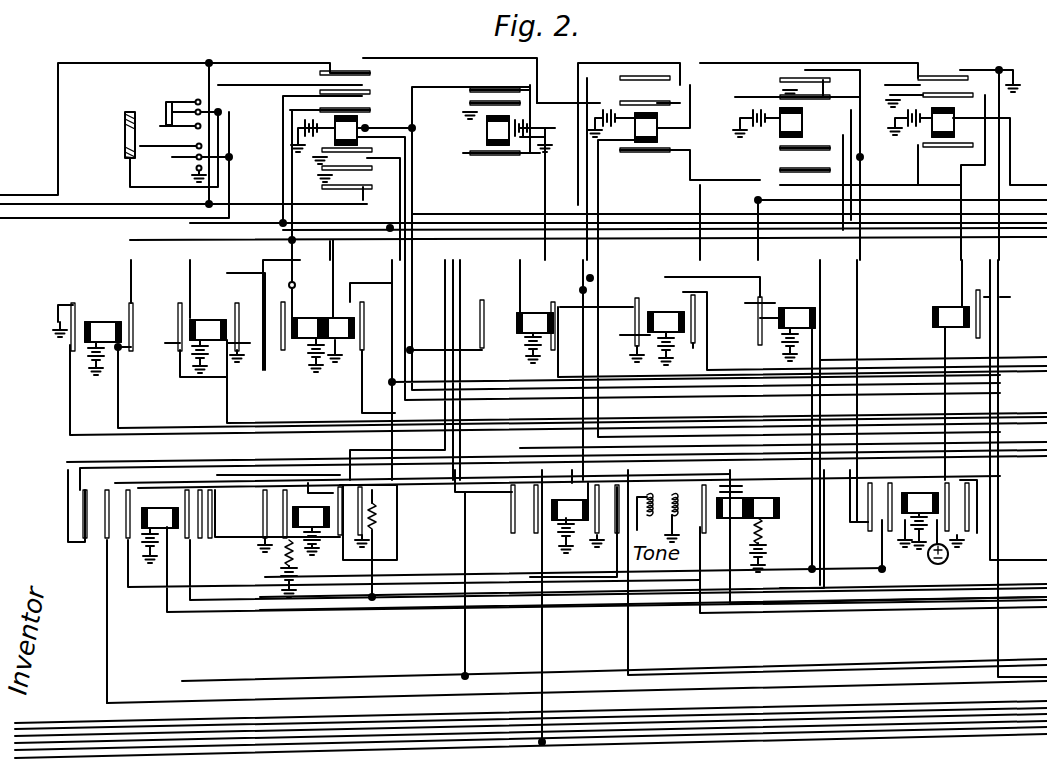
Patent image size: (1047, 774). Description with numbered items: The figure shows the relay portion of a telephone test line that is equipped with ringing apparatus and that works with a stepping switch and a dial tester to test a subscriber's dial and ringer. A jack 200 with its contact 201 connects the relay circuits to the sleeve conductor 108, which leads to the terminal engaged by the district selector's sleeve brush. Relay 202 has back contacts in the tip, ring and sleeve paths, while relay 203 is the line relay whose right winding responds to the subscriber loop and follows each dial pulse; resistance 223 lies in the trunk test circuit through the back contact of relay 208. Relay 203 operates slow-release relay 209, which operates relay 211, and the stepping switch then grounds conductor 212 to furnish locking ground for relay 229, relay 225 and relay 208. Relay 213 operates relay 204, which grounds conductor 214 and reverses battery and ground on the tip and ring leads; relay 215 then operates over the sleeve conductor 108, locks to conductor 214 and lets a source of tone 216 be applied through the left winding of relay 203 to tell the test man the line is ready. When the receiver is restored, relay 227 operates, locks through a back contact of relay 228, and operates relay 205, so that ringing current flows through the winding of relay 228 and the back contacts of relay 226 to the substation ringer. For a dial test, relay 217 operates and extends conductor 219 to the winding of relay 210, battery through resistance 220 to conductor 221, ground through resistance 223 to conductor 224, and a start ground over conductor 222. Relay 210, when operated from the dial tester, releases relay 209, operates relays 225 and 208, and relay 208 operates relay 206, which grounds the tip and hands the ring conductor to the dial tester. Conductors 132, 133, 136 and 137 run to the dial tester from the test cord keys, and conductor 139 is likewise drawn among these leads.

The sleeve conductor 108 is at (38, 220).
The jack 200 is at (152, 128).
The contact 201 is at (183, 94).
The relay 202 is at (366, 127).
The relay 203 is at (768, 518).
The relay 204 is at (766, 128).
The relay 205 is at (649, 143).
The relay 206 is at (497, 146).
The relay 208 is at (325, 548).
The relay 209 is at (789, 308).
The relay 210 is at (562, 520).
The relay 211 is at (657, 312).
The conductor 212 is at (920, 224).
The relay 213 is at (190, 320).
The conductor 214 is at (470, 232).
The relay 215 is at (300, 345).
The source of tone 216 is at (664, 495).
The relay 217 is at (154, 508).
The conductor 219 is at (324, 699).
The resistance 220 is at (282, 552).
The conductor 221 is at (628, 656).
The conductor 222 is at (388, 742).
The resistance 223 is at (378, 520).
The conductor 224 is at (268, 678).
The relay 225 is at (530, 312).
The relay 226 is at (930, 129).
The relay 227 is at (902, 493).
The relay 228 is at (949, 307).
The relay 229 is at (101, 322).
The conductor 132 is at (660, 730).
The conductor 133 is at (467, 748).
The conductor 136 is at (714, 723).
The conductor 137 is at (760, 718).
The conductor 139 is at (808, 708).